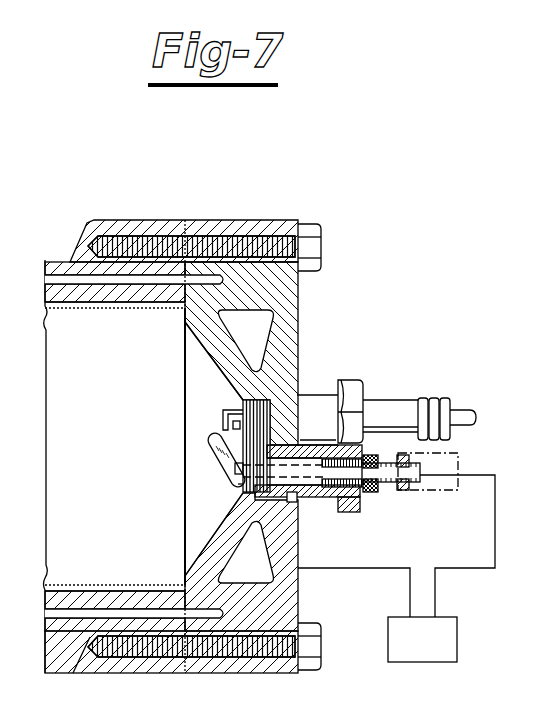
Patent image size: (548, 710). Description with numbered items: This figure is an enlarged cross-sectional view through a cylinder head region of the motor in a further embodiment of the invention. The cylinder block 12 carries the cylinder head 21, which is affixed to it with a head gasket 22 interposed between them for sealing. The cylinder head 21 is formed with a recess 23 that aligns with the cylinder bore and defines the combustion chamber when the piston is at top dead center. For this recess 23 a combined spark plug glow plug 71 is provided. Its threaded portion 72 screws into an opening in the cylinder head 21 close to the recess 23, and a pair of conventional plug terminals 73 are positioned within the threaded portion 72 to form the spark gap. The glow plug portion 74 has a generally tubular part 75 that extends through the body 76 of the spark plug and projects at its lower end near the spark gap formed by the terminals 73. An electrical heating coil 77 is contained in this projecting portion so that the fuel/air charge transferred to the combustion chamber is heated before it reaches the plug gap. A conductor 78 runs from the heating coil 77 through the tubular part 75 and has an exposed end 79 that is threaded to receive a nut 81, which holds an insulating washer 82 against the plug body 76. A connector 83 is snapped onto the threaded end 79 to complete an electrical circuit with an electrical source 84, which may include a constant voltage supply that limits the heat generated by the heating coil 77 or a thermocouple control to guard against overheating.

The cylinder block 12 is at (125, 232).
The cylinder head 21 is at (300, 297).
The head gasket 22 is at (188, 232).
The recess 23 is at (214, 385).
The combined spark plug glow plug 71 is at (380, 406).
The threaded portion 72 is at (243, 410).
The plug terminals 73 is at (223, 422).
The glow plug portion 74 is at (207, 471).
The tubular part 75 is at (346, 513).
The body 76 is at (316, 498).
The electrical heating coil 77 is at (210, 452).
The conductor 78 is at (360, 498).
The exposed end 79 is at (392, 462).
The nut 81 is at (385, 490).
The insulating washer 82 is at (368, 492).
The connector 83 is at (415, 433).
The electrical source 84 is at (436, 653).